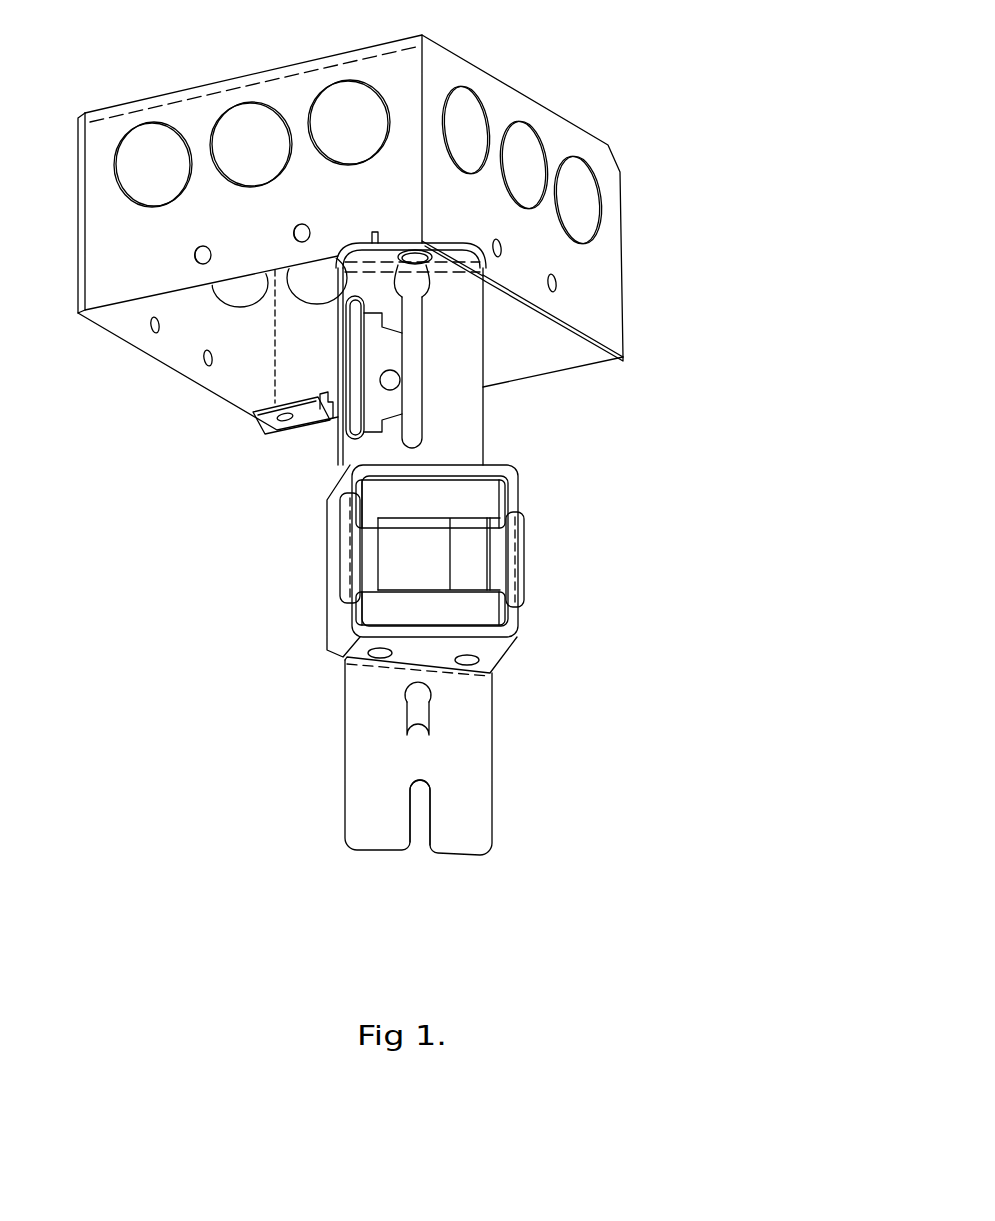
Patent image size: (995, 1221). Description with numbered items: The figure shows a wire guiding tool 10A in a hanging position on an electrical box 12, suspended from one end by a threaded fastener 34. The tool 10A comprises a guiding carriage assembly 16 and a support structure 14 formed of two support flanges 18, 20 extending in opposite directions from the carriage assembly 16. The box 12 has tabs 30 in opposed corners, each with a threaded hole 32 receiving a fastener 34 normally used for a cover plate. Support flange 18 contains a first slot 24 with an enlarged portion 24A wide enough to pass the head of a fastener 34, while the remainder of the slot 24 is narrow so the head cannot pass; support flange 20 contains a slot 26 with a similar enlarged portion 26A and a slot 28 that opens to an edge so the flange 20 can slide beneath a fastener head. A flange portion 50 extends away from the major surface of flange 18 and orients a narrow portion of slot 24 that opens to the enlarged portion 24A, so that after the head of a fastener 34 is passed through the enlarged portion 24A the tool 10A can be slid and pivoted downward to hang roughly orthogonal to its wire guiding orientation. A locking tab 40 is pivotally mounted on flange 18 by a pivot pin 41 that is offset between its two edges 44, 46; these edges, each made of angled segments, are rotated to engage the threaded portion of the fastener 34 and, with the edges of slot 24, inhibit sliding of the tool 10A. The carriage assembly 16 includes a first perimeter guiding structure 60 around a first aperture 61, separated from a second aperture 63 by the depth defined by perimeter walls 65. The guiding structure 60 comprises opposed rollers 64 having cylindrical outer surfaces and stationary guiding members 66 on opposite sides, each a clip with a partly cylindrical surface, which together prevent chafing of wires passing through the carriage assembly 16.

The wire guiding tool 10A is at (397, 471).
The electrical box 12 is at (408, 274).
The support structure 14 is at (381, 471).
The guiding carriage assembly 16 is at (410, 595).
The support flange 18 is at (381, 256).
The support flange 20 is at (520, 798).
The first slot 24 is at (559, 350).
The enlarged portion 24A is at (425, 295).
The slot 26 is at (550, 716).
The enlarged portion 26A is at (433, 698).
The slot 28 is at (430, 818).
The tab 30 is at (235, 452).
The threaded hole 32 is at (275, 432).
The threaded fastener 34 is at (428, 250).
The locking tab 40 is at (363, 365).
The pivot pin 41 is at (370, 383).
The edge 44 is at (415, 330).
The edge 46 is at (383, 412).
The flange portion 50 is at (480, 238).
The first perimeter guiding structure 60 is at (444, 562).
The first aperture 61 is at (383, 583).
The second aperture 63 is at (450, 560).
The roller 64 is at (468, 507).
The perimeter wall 65 is at (320, 655).
The guiding member 66 is at (353, 535).